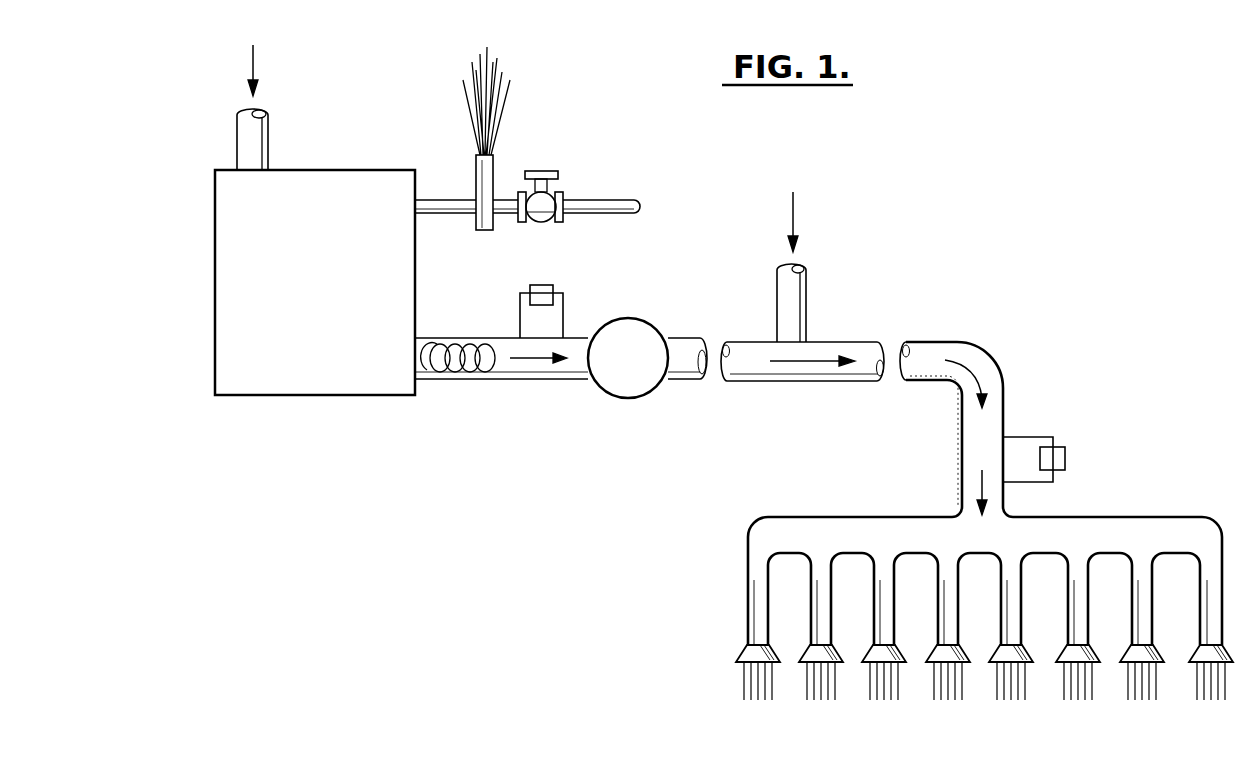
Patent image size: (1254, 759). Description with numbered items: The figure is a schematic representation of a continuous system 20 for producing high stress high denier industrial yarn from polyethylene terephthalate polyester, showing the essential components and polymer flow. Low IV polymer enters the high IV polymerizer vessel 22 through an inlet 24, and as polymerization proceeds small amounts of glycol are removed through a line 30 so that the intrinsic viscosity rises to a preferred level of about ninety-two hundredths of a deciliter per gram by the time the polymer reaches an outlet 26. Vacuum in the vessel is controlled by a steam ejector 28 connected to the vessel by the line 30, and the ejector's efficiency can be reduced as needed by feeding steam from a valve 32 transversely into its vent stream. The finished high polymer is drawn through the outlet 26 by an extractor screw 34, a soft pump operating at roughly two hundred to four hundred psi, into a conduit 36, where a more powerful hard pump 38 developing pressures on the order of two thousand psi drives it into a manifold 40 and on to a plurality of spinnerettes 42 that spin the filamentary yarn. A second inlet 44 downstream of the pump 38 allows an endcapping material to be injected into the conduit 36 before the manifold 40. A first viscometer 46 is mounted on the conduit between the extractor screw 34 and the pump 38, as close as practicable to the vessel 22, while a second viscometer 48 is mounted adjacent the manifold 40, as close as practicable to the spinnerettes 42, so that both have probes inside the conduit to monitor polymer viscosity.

The system 20 is at (1052, 242).
The high IV polymerizer vessel 22 is at (318, 358).
The inlet 24 is at (246, 130).
The outlet 26 is at (413, 362).
The steam ejector 28 is at (494, 167).
The line 30 is at (444, 197).
The valve 32 is at (563, 195).
The extractor screw 34 is at (467, 372).
The conduit 36 is at (855, 341).
The hard pump 38 is at (620, 398).
The manifold 40 is at (885, 515).
The spinnerettes 42 is at (875, 648).
The second inlet 44 is at (810, 293).
The first viscometer 46 is at (545, 285).
The second viscometer 48 is at (1066, 458).